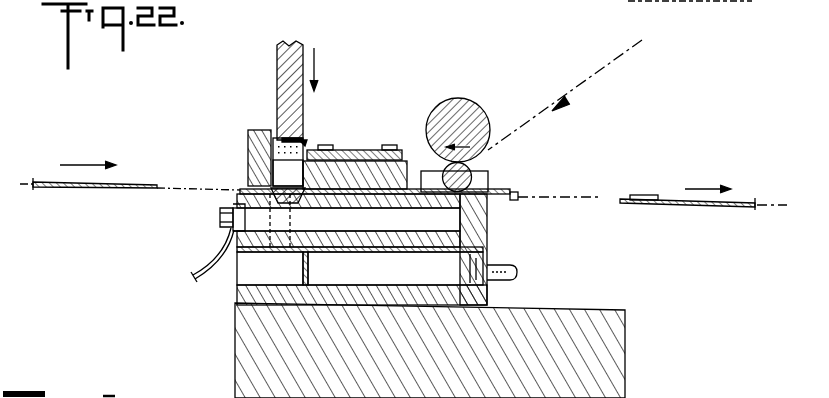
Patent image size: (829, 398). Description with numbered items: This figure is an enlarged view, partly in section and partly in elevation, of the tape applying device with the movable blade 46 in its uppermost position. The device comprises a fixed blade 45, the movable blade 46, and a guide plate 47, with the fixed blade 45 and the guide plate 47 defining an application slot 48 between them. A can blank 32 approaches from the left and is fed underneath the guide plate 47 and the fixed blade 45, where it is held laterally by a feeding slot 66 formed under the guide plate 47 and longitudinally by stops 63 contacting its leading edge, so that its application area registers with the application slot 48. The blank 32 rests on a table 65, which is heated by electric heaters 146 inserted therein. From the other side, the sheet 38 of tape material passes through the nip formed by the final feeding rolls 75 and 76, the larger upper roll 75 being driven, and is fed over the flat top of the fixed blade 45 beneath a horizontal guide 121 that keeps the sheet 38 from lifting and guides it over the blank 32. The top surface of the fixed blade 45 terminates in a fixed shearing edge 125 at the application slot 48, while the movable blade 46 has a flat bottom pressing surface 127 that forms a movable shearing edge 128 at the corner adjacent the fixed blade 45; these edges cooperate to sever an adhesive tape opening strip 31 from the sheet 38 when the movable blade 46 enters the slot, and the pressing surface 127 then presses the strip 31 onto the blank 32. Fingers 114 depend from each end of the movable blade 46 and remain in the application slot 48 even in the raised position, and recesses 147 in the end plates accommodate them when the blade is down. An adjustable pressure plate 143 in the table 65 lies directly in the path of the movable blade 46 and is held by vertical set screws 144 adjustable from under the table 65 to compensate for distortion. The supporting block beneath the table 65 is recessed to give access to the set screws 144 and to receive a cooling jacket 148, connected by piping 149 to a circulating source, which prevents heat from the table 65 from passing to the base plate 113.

The movable blade 46 is at (277, 58).
The movable shearing edge 128 is at (297, 138).
The pressing surface 127 is at (305, 140).
The guide plate 47 is at (248, 130).
The finger 114 is at (283, 150).
The application slot 48 is at (288, 181).
The fixed shearing edge 125 is at (325, 150).
The horizontal guide 121 is at (356, 156).
The fixed blade 45 is at (381, 161).
The feeding slot 66 is at (248, 188).
The table 65 is at (240, 199).
The electric heater 146 is at (220, 215).
The pressure plate 143 is at (233, 266).
The base plate 113 is at (236, 331).
The recess 147 is at (265, 262).
The vertical set screw 144 is at (314, 256).
The cooling jacket 148 is at (414, 283).
The piping 149 is at (516, 272).
The upper final feeding roll 75 is at (466, 99).
The lower final feeding roll 76 is at (471, 173).
The stop 63 is at (517, 193).
The sheet of tape material 38 is at (604, 80).
The blank 32 is at (87, 188).
The adhesive tape opening strip 31 is at (645, 195).